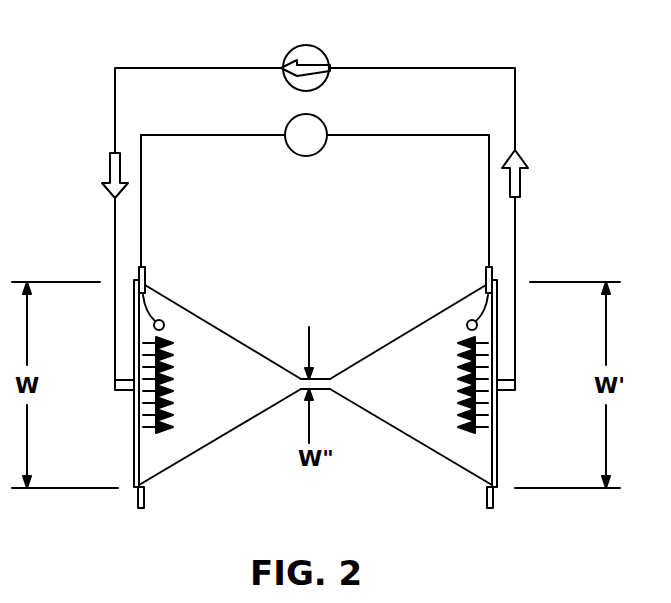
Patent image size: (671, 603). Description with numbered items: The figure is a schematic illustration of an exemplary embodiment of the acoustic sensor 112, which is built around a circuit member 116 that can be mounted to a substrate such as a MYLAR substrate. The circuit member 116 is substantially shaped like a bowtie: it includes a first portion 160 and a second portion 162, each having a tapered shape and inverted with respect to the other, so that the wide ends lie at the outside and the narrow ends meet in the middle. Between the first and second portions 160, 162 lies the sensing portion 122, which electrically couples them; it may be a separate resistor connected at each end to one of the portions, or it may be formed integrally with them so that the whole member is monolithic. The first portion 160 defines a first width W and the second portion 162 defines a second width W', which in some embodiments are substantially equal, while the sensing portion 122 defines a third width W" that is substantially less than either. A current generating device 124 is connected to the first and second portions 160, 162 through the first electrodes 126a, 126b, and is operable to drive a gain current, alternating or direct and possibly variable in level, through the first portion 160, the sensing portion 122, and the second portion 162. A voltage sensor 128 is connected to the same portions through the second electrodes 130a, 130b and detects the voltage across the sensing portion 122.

The acoustic sensor 112 is at (566, 124).
The circuit member 116 is at (315, 399).
The sensing portion 122 is at (320, 377).
The current generating device 124 is at (326, 52).
The first electrode 126a is at (115, 384).
The first electrode 126b is at (515, 385).
The voltage sensor 128 is at (327, 124).
The second electrode 130a is at (145, 276).
The second electrode 130b is at (486, 277).
The first portion 160 is at (134, 465).
The second portion 162 is at (497, 465).